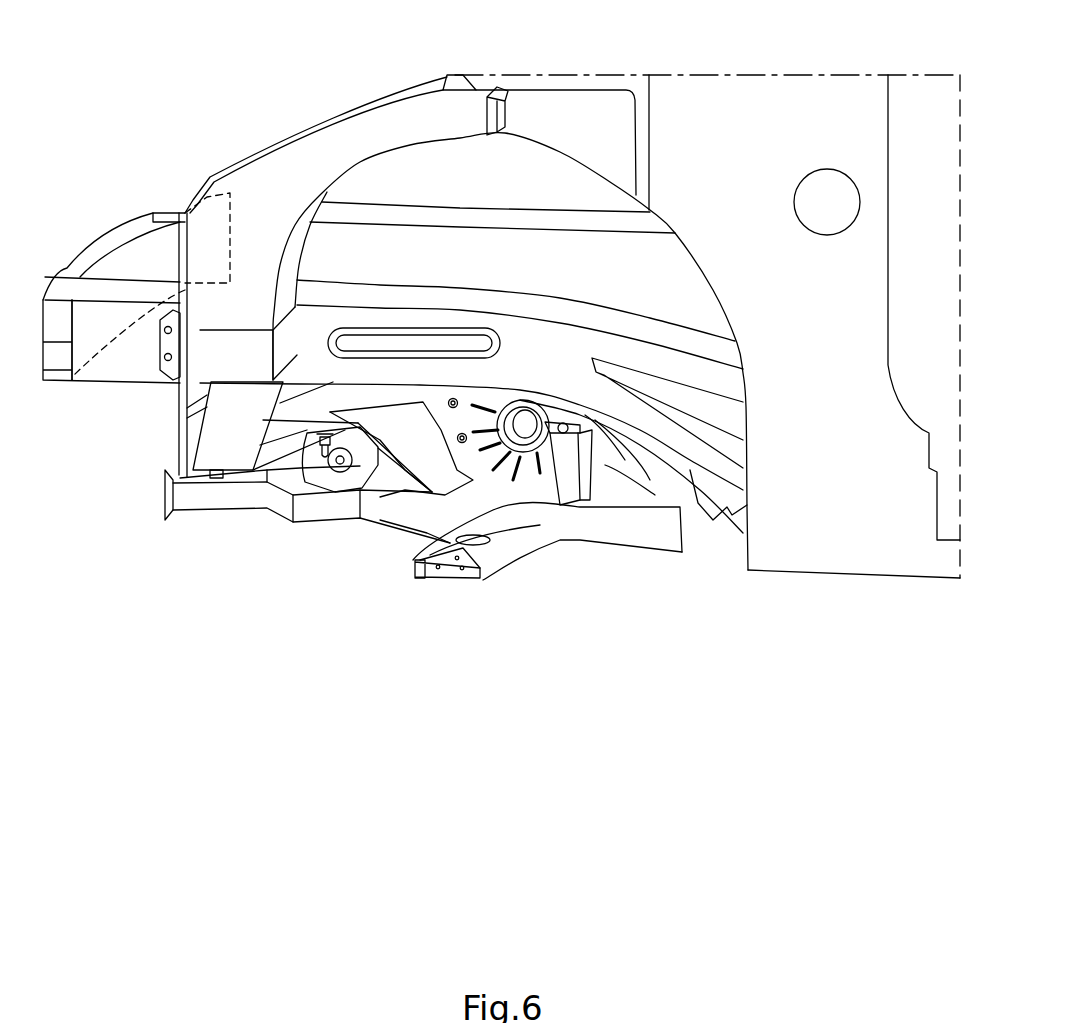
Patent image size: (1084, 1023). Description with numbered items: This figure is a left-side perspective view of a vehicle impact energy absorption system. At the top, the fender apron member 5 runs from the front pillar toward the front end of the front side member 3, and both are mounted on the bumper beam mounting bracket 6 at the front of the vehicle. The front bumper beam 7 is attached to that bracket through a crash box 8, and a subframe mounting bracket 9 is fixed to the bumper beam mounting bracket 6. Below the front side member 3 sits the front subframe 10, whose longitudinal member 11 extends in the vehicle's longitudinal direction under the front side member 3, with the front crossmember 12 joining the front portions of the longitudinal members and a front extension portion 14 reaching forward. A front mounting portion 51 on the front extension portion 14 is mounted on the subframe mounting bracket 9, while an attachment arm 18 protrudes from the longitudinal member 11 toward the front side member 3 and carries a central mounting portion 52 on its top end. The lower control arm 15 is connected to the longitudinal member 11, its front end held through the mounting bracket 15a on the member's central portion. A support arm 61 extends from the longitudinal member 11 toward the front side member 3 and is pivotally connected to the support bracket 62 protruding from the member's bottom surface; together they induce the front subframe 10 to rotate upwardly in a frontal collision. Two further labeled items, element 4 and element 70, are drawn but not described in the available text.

The front side member 3 is at (528, 217).
The side panel 4 is at (835, 548).
The fender apron member 5 is at (385, 122).
The bumper beam mounting bracket 6 is at (175, 393).
The front bumper beam 7 is at (88, 262).
The crash box 8 is at (122, 358).
The subframe mounting bracket 9 is at (205, 430).
The front subframe 10 is at (368, 533).
The longitudinal member 11 is at (400, 515).
The front crossmember 12 is at (410, 417).
The front extension portion 14 is at (193, 502).
The lower control arm 15 is at (523, 542).
The mounting bracket 15a is at (480, 537).
The attachment arm 18 is at (360, 475).
The front mounting portion 51 is at (216, 480).
The central mounting portion 52 is at (318, 452).
The support arm 61 is at (573, 487).
The support bracket 62 is at (553, 436).
The hub 70 is at (505, 535).